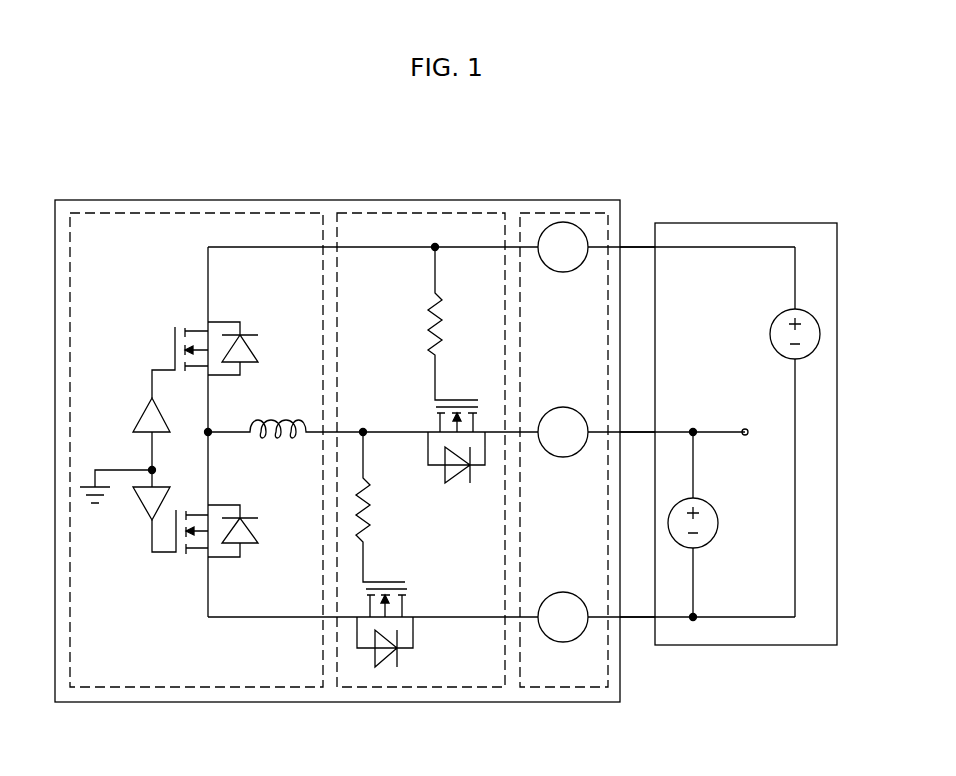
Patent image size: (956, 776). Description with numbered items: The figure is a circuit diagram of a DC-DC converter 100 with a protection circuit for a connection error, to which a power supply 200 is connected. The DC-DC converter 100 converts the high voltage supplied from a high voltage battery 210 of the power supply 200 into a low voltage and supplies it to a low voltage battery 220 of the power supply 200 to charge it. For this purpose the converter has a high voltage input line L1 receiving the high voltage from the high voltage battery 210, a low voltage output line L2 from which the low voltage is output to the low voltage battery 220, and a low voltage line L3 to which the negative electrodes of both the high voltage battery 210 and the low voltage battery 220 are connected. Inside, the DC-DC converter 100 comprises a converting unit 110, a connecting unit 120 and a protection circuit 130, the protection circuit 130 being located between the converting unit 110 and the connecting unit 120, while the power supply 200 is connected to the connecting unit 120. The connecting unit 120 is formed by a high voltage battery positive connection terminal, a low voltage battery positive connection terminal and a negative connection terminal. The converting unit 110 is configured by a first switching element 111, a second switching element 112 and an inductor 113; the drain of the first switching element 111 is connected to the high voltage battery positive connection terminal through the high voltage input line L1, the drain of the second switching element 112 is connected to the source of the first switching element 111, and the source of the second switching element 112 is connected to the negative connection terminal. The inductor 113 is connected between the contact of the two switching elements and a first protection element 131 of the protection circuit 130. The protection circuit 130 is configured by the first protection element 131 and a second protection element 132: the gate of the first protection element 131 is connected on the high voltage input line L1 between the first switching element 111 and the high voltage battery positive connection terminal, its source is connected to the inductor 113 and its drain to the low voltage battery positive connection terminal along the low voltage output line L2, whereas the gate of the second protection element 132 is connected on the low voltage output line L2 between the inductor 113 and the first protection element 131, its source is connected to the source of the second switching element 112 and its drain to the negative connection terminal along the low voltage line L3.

The DC-DC converter 100 is at (335, 200).
The converting unit 110 is at (197, 213).
The first switching element 111 is at (214, 319).
The second switching element 112 is at (216, 567).
The inductor 113 is at (264, 442).
The connecting unit 120 is at (565, 213).
The protection circuit 130 is at (420, 213).
The first protection element 131 is at (463, 389).
The second protection element 132 is at (405, 578).
The power supply 200 is at (745, 223).
The high voltage battery 210 is at (805, 310).
The low voltage battery 220 is at (708, 545).
The high voltage input line L1 is at (635, 247).
The low voltage output line L2 is at (628, 430).
The low voltage line L3 is at (635, 620).